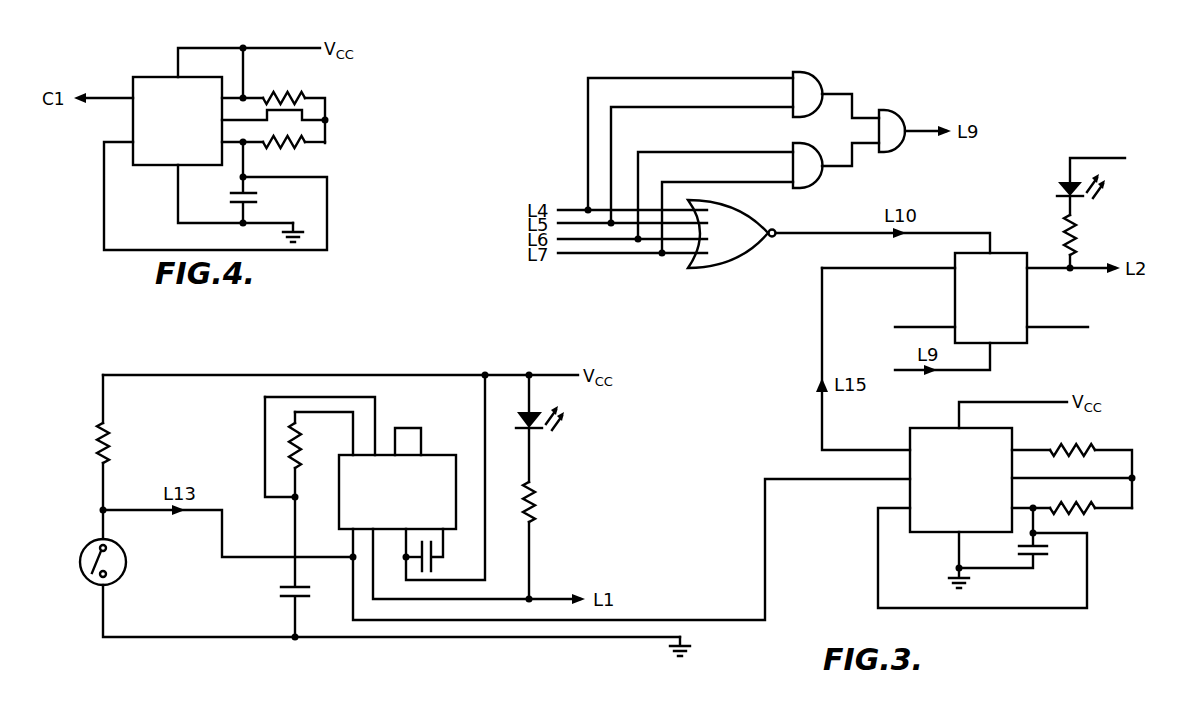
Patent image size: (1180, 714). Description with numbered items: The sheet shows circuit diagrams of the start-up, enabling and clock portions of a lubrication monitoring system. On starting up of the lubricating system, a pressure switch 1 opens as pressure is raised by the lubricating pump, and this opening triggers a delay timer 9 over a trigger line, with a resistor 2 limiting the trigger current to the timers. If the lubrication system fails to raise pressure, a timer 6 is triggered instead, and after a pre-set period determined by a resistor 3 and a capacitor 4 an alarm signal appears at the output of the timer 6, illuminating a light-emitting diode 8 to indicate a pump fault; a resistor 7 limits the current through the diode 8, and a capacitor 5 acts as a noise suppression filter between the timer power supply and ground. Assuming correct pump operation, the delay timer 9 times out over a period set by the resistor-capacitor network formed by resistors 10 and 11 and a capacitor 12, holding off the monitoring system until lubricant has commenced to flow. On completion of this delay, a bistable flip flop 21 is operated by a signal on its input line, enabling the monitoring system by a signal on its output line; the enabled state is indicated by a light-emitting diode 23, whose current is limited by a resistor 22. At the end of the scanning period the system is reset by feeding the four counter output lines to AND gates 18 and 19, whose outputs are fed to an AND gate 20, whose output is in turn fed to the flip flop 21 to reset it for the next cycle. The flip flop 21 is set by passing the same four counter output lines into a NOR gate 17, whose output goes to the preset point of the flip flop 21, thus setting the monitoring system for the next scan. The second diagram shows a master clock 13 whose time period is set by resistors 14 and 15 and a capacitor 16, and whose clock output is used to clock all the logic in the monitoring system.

In FIG. 3, the pressure switch 1 is at (124, 560).
In FIG. 3, the resistor 2 is at (110, 436).
In FIG. 3, the resistor 3 is at (303, 440).
In FIG. 3, the capacitor 4 is at (301, 588).
In FIG. 3, the capacitor 5 is at (436, 563).
In FIG. 3, the timer 6 is at (389, 516).
In FIG. 3, the resistor 7 is at (537, 508).
In FIG. 3, the light-emitting diode 8 is at (522, 410).
In FIG. 3, the delay timer 9 is at (953, 512).
In FIG. 3, the resistor 10 is at (1086, 448).
In FIG. 3, the resistor 11 is at (1086, 506).
In FIG. 3, the capacitor 12 is at (1038, 562).
In FIG. 4, the master clock 13 is at (166, 156).
In FIG. 4, the resistor 14 is at (290, 96).
In FIG. 4, the resistor 15 is at (296, 128).
In FIG. 4, the capacitor 16 is at (254, 195).
In FIG. 3, the NOR gate 17 is at (735, 262).
In FIG. 3, the AND gate 18 is at (816, 92).
In FIG. 3, the AND gate 19 is at (816, 160).
In FIG. 3, the AND gate 20 is at (902, 116).
In FIG. 3, the bistable flip flop 21 is at (981, 324).
In FIG. 3, the resistor 22 is at (1080, 242).
In FIG. 3, the light-emitting diode 23 is at (1058, 185).